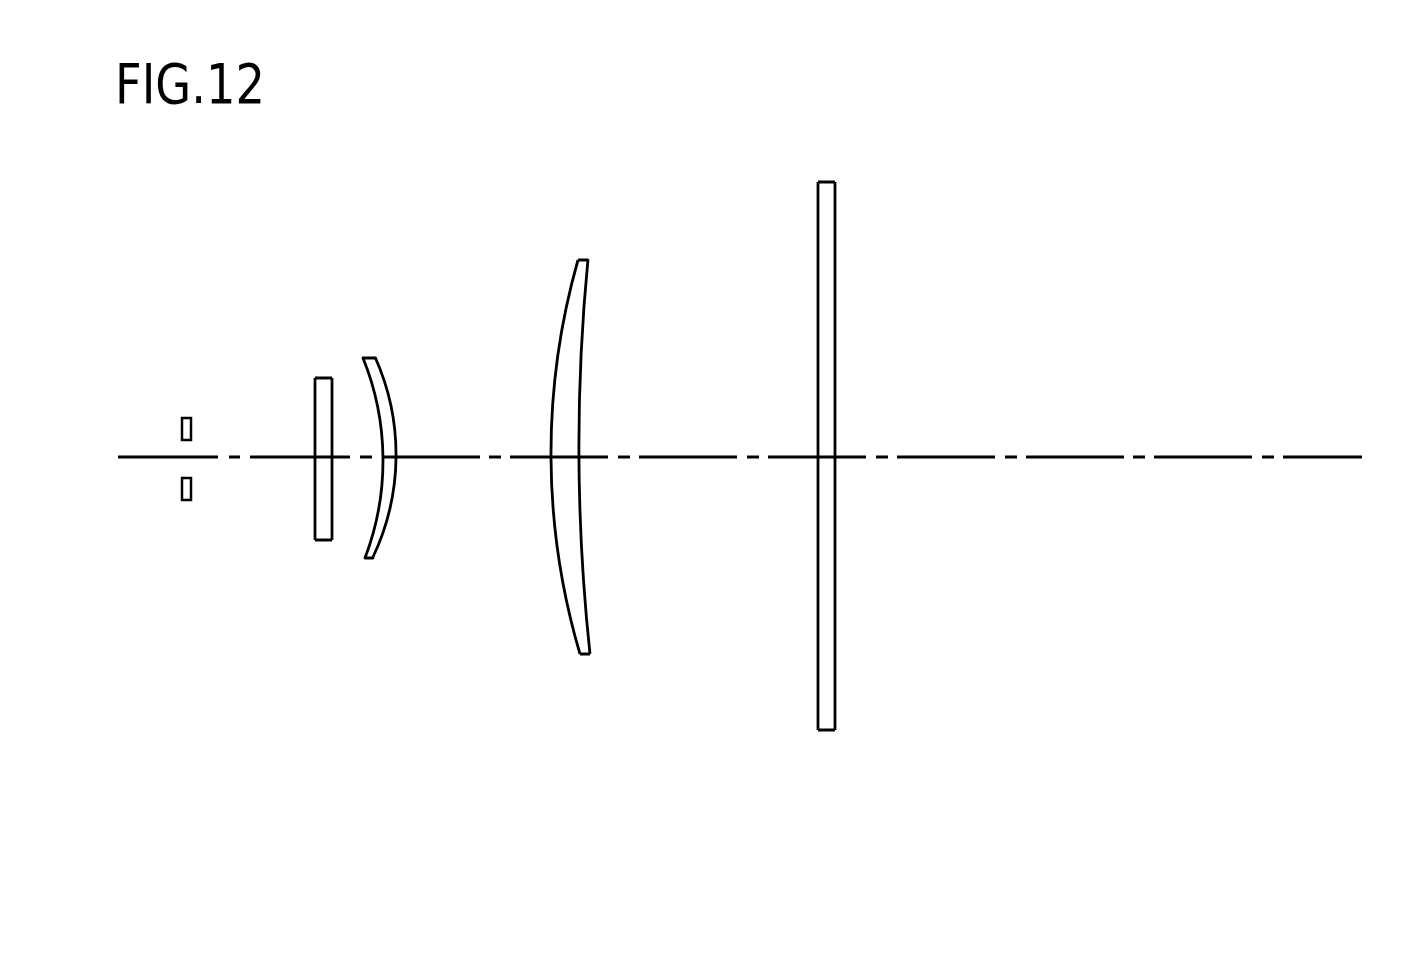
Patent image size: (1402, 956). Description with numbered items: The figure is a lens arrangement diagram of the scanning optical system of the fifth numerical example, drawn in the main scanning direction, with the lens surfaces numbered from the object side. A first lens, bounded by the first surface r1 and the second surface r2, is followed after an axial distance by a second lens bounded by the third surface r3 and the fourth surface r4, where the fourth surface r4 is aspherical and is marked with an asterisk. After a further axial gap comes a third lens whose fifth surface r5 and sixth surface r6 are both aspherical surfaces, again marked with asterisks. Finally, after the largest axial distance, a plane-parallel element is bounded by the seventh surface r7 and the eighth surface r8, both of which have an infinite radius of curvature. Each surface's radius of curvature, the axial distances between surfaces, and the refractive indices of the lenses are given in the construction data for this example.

The first surface r1 is at (315, 406).
The second surface r2 is at (332, 403).
The third surface r3 is at (376, 516).
The fourth surface r4 is at (522, 576).
The fifth surface r5 is at (565, 307).
The sixth surface r6 is at (733, 236).
The seventh surface r7 is at (818, 238).
The eighth surface r8 is at (835, 240).